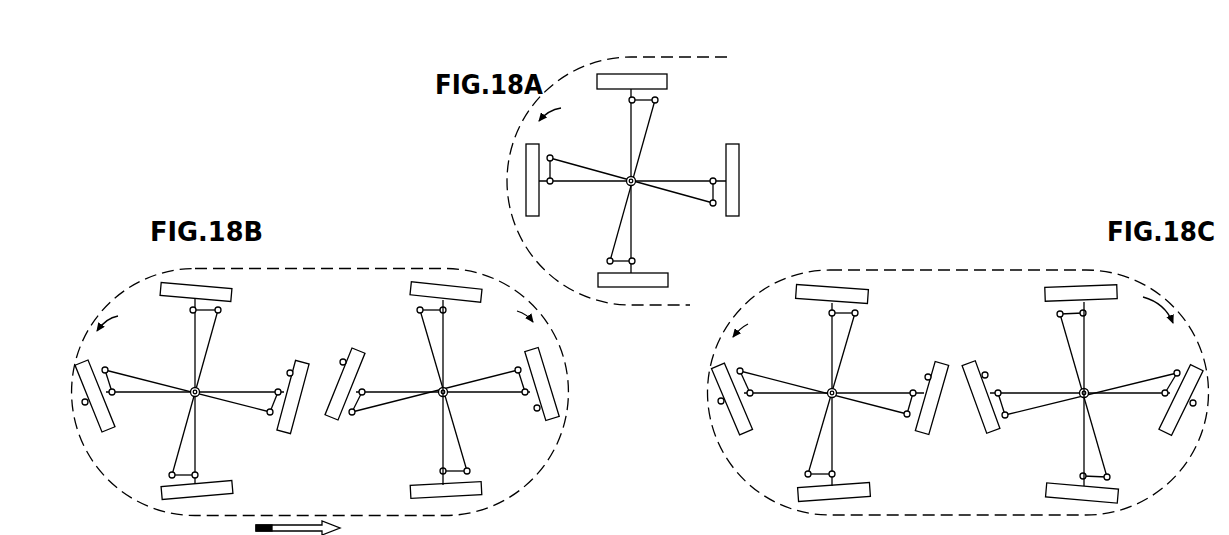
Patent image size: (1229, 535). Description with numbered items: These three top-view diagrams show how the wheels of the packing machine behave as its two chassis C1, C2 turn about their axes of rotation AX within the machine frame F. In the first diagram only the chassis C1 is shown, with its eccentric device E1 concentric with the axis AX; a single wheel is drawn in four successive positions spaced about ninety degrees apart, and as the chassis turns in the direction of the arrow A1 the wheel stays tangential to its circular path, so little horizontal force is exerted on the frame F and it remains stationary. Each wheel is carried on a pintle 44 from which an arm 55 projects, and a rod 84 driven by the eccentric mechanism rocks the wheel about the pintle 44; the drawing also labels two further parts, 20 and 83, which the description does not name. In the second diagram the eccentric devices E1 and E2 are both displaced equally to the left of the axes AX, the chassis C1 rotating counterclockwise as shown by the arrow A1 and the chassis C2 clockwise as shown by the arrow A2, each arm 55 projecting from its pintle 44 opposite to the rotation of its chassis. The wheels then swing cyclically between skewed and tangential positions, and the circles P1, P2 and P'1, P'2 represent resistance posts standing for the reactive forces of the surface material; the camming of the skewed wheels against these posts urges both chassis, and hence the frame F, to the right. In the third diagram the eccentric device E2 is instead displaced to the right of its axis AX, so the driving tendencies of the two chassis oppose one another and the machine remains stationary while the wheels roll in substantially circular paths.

In FIG. 18A, the machine frame F is at (515, 140).
In FIG. 18B, the machine frame F is at (326, 266).
In FIG. 18C, the machine frame F is at (918, 268).
In FIG. 18A, the arrow A1 is at (559, 111).
In FIG. 18B, the arrow A1 is at (116, 320).
In FIG. 18C, the arrow A1 is at (750, 327).
In FIG. 18B, the arrow A2 is at (515, 316).
In FIG. 18C, the arrow A2 is at (1160, 305).
In FIG. 18A, the chassis C1 is at (628, 131).
In FIG. 18B, the chassis C1 is at (188, 353).
In FIG. 18C, the chassis C1 is at (826, 350).
In FIG. 18B, the chassis C2 is at (448, 361).
In FIG. 18C, the chassis C2 is at (1088, 363).
In FIG. 18A, the eccentric device E1 is at (627, 186).
In FIG. 18B, the eccentric device E1 is at (184, 398).
In FIG. 18C, the eccentric device E1 is at (828, 391).
In FIG. 18B, the eccentric device E2 is at (437, 398).
In FIG. 18C, the eccentric device E2 is at (1088, 390).
In FIG. 18A, the axis of rotation AX is at (636, 178).
In FIG. 18B, the axis of rotation AX is at (198, 390).
In FIG. 18C, the axis of rotation AX is at (835, 390).
In FIG. 18A, the axle 20 is at (682, 178).
In FIG. 18B, the axle 20 is at (243, 390).
In FIG. 18C, the axle 20 is at (885, 390).
In FIG. 18A, the pintle 44 is at (712, 178).
In FIG. 18B, the pintle 44 is at (281, 388).
In FIG. 18C, the pintle 44 is at (913, 390).
In FIG. 18A, the arm 55 is at (715, 192).
In FIG. 18B, the arm 55 is at (277, 414).
In FIG. 18C, the arm 55 is at (857, 312).
In FIG. 18A, the tie rod end pivot 83 is at (711, 207).
In FIG. 18A, the rod 84 is at (676, 197).
In FIG. 18B, the rod 84 is at (235, 407).
In FIG. 18C, the rod 84 is at (880, 410).
In FIG. 18B, the resistance post P1 is at (290, 369).
In FIG. 18C, the resistance post P1 is at (933, 381).
In FIG. 18B, the resistance post P2 is at (82, 402).
In FIG. 18C, the resistance post P2 is at (719, 402).
In FIG. 18B, the resistance post P'1 is at (561, 425).
In FIG. 18C, the resistance post P'1 is at (1209, 380).
In FIG. 18B, the resistance post P'2 is at (338, 350).
In FIG. 18C, the resistance post P'2 is at (992, 359).